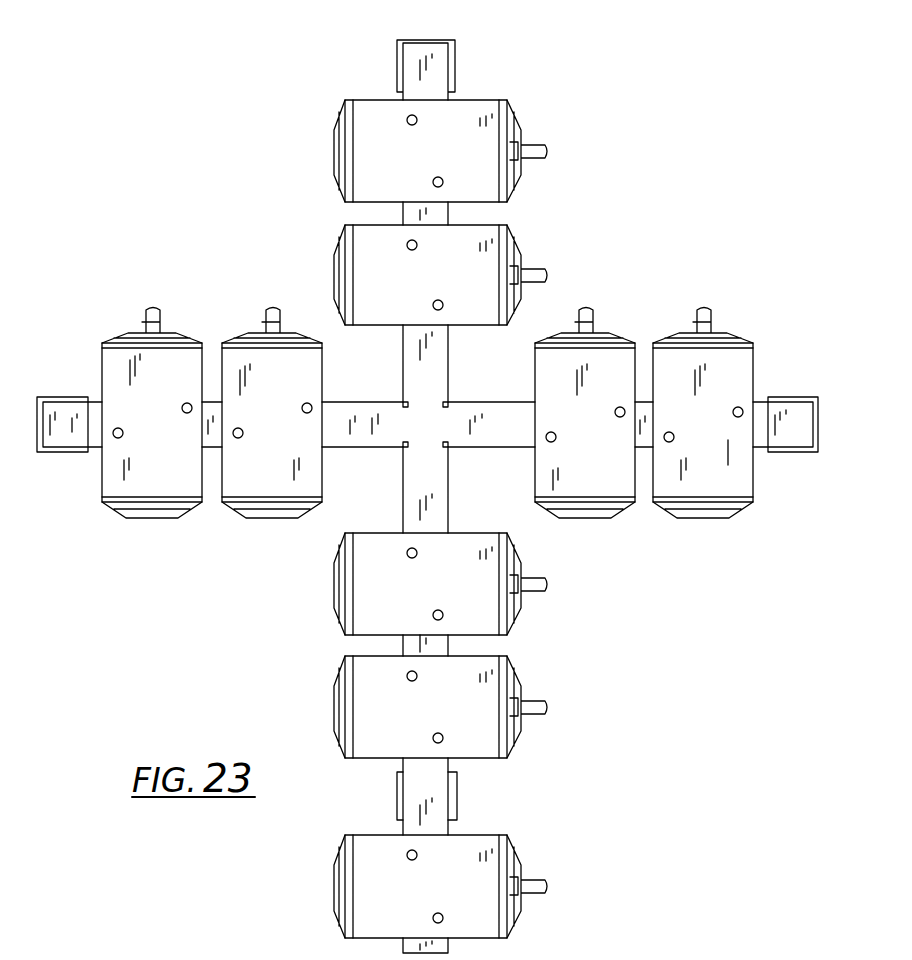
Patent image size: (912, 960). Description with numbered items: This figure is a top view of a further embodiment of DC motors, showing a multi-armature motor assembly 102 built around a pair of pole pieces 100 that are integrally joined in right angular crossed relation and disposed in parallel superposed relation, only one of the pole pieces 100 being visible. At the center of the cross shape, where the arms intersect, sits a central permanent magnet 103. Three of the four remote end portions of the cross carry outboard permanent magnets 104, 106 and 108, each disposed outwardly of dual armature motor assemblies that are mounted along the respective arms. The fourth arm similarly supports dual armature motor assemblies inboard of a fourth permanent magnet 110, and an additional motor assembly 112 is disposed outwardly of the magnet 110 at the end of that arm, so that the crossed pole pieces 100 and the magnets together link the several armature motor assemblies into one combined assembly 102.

The pole pieces 100 is at (498, 402).
The multi-armature motor assembly 102 is at (267, 568).
The central permanent magnet 103 is at (401, 400).
The outboard permanent magnet 104 is at (50, 397).
The outboard permanent magnet 106 is at (457, 55).
The outboard permanent magnet 108 is at (803, 400).
The fourth permanent magnet 110 is at (397, 800).
The additional motor assembly 112 is at (335, 866).